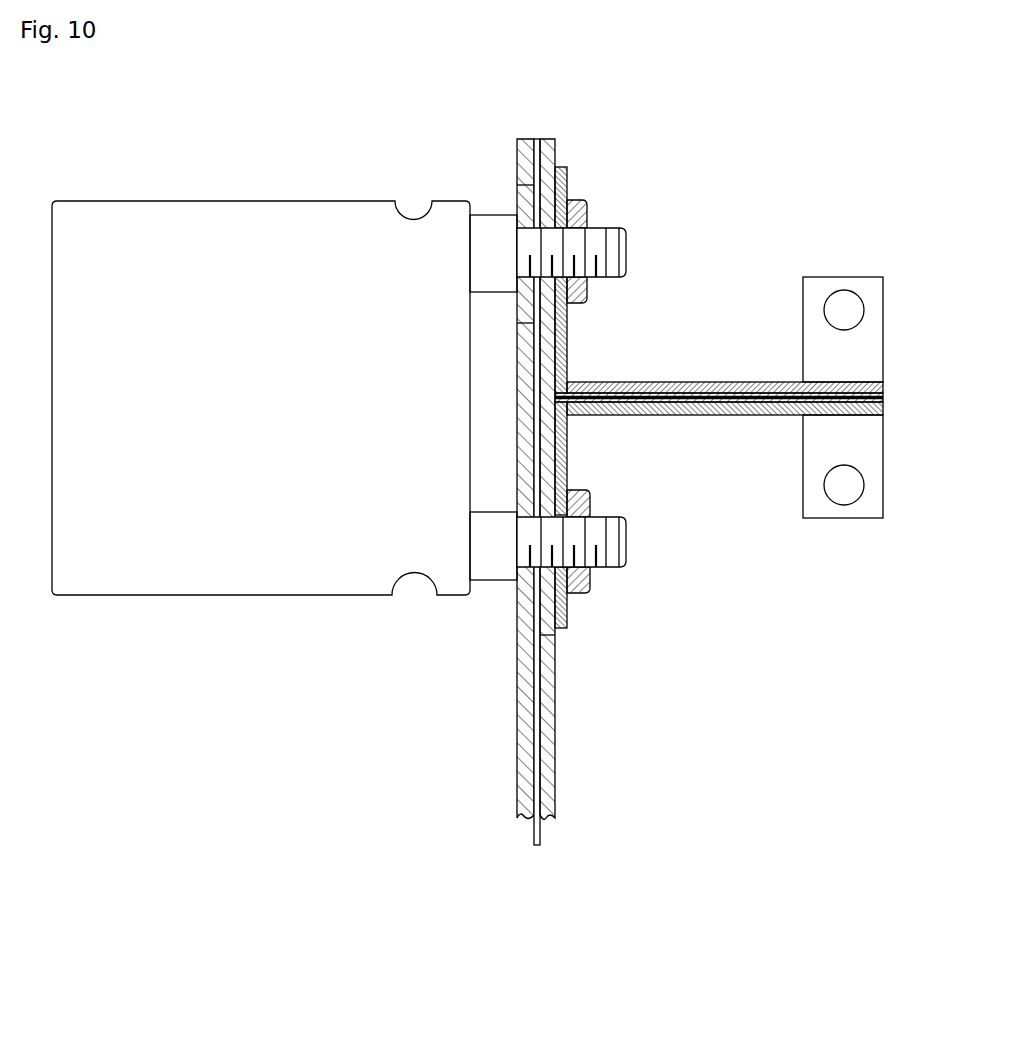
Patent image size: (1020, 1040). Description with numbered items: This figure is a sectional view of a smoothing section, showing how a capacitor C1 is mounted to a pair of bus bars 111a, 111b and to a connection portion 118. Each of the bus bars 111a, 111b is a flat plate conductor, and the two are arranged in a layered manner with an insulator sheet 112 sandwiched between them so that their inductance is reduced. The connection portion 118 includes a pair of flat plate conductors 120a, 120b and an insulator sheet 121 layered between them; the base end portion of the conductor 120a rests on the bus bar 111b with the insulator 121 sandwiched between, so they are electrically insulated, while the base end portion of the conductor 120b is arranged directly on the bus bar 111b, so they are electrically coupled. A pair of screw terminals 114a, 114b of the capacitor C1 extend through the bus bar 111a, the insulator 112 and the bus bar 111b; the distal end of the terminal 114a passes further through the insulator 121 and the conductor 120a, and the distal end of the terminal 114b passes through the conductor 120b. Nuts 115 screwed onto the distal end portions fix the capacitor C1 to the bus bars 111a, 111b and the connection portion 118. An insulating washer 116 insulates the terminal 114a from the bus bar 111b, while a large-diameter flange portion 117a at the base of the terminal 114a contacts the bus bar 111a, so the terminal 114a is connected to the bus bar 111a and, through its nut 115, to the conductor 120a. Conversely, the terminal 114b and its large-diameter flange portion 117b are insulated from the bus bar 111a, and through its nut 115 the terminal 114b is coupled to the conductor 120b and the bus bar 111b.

The capacitor C1 is at (223, 597).
The bus bar 111a is at (517, 740).
The bus bar 111b is at (555, 742).
The insulator sheet 112 is at (541, 830).
The terminal 114a is at (628, 548).
The terminal 114b is at (627, 252).
The nut 115 is at (585, 198).
The insulating washer 116 is at (515, 205).
The large-diameter flange portion 117a is at (485, 587).
The large-diameter flange portion 117b is at (487, 240).
The connection portion 118 is at (828, 272).
The flat plate conductor 120a is at (637, 418).
The flat plate conductor 120b is at (697, 380).
The insulator sheet 121 is at (757, 415).